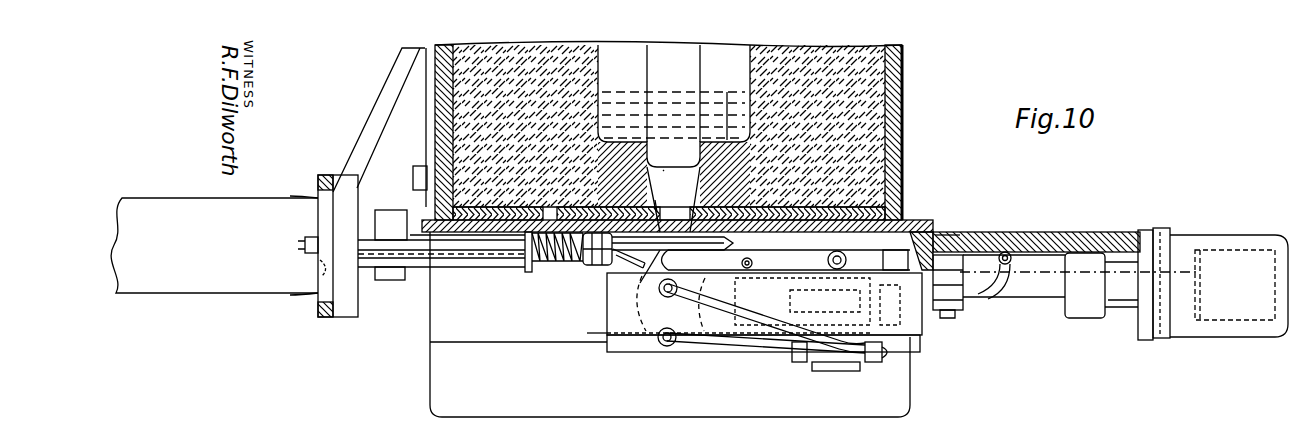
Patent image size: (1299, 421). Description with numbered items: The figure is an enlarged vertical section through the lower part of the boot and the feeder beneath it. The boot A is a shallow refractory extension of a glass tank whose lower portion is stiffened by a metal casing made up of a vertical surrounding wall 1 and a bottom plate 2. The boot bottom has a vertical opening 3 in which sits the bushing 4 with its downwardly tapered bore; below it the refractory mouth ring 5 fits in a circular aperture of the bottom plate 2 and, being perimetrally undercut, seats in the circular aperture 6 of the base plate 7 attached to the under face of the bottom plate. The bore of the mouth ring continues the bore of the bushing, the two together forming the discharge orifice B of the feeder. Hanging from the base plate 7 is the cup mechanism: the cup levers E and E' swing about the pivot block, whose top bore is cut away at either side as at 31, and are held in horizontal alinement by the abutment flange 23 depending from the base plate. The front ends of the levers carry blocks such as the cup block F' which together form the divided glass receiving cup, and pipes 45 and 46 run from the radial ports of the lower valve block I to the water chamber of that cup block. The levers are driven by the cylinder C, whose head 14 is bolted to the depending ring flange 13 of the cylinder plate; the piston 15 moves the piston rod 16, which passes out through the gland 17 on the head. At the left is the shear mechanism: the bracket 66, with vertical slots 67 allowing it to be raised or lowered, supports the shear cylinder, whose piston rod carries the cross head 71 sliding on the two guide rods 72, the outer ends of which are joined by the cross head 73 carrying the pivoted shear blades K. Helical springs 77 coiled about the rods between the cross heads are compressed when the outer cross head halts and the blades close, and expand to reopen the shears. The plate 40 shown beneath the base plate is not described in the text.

The furnace block A is at (684, 131).
The furnace wall 1 is at (904, 165).
The crucible E is at (674, 106).
The partition 3 is at (728, 130).
The nozzle passage 4 is at (673, 199).
The nozzle B is at (675, 179).
The nozzle opening 5 is at (664, 201).
The plate opening 6 is at (675, 219).
The base plate 2 is at (905, 217).
The bracket 7 is at (926, 233).
The slide plate 40 is at (1049, 235).
The guide 23 is at (957, 224).
The arm 66 is at (379, 127).
The collar 67 is at (401, 223).
The shaft 72 is at (405, 255).
The collar 71 is at (527, 274).
The spring 73 is at (557, 264).
The nut 77 is at (548, 264).
The frame E' is at (739, 304).
The cam K is at (625, 286).
The slide bar 31 is at (786, 260).
The link 46 is at (769, 352).
The base frame F' is at (675, 324).
The stop block 45 is at (876, 369).
The bracket I is at (826, 368).
The rod 16 is at (1048, 300).
The collar 17 is at (1083, 318).
The flange 13 is at (1140, 232).
The flange ring 14 is at (1156, 228).
The coupling 15 is at (1170, 296).
The cylinder C is at (1229, 271).